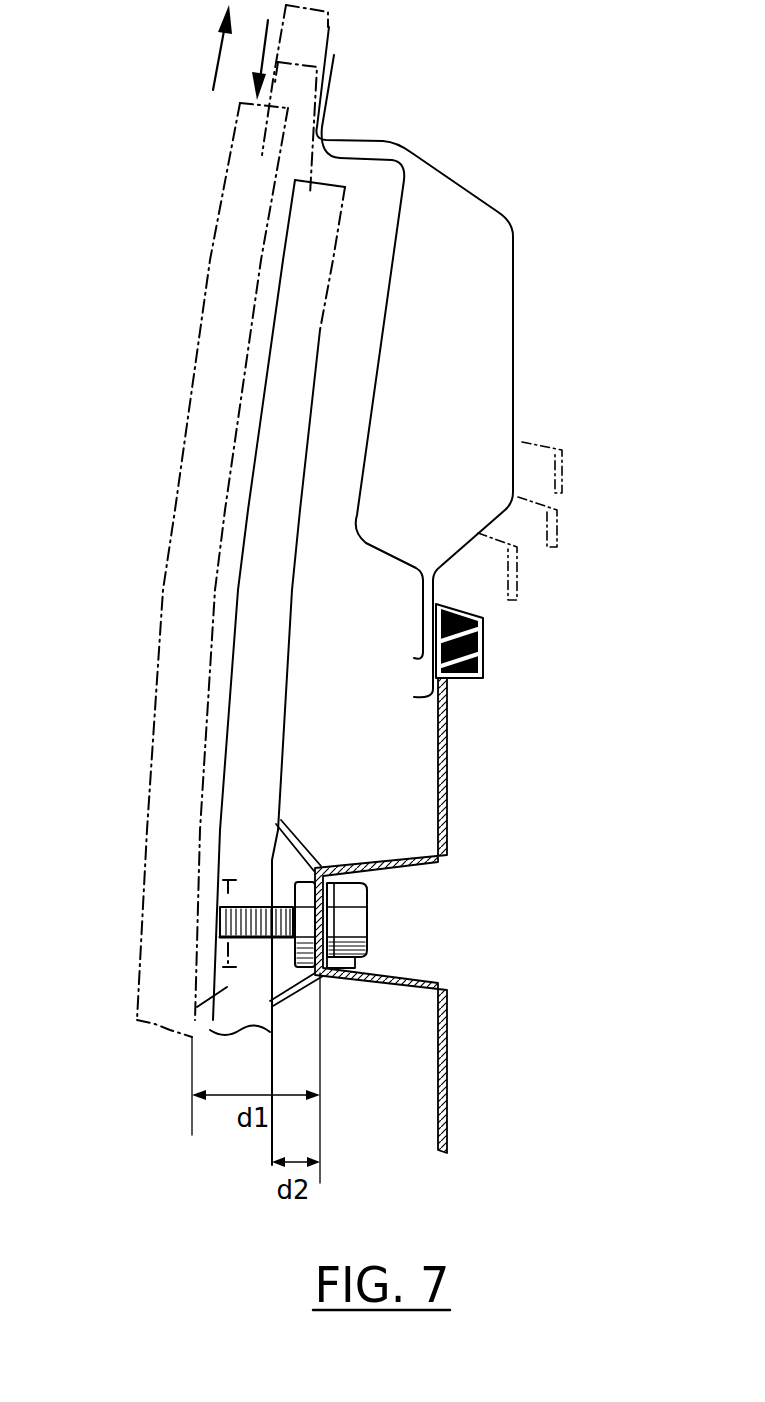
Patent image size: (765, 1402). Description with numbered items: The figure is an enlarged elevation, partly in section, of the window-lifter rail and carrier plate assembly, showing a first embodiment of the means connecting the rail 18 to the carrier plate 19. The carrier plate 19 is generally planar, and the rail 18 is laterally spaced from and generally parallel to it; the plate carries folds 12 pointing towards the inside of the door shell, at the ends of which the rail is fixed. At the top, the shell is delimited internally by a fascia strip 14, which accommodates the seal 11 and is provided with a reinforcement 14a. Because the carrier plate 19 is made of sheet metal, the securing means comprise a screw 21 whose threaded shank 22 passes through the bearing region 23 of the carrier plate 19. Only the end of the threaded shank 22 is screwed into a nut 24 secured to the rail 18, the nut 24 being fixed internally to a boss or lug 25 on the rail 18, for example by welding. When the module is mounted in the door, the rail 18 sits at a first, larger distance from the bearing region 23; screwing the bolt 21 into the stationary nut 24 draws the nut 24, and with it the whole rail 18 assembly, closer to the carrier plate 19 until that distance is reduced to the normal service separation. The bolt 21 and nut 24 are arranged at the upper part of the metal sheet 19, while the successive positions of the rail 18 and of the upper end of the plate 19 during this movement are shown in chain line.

The seal 11 is at (480, 660).
The folds 12 is at (370, 988).
The fascia strip 14 is at (375, 412).
The reinforcement 14a is at (517, 353).
The rail 18 is at (228, 617).
The carrier plate 19 is at (572, 479).
The screw 21 is at (380, 935).
The threaded shank 22 is at (260, 900).
The bearing region 23 is at (332, 967).
The nut 24 is at (217, 950).
The lug 25 is at (302, 850).